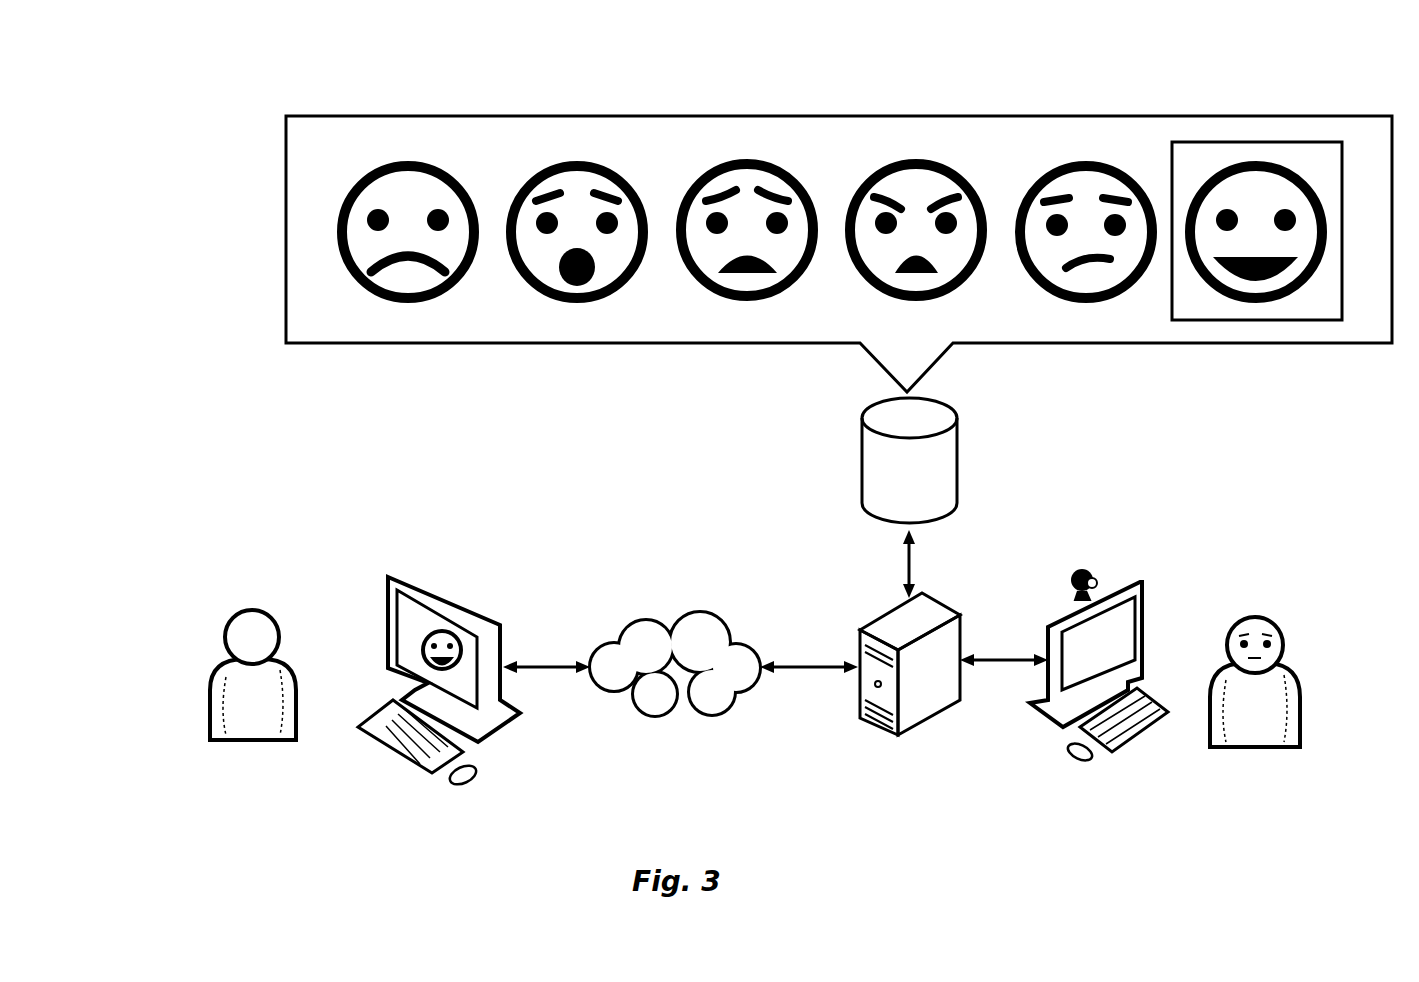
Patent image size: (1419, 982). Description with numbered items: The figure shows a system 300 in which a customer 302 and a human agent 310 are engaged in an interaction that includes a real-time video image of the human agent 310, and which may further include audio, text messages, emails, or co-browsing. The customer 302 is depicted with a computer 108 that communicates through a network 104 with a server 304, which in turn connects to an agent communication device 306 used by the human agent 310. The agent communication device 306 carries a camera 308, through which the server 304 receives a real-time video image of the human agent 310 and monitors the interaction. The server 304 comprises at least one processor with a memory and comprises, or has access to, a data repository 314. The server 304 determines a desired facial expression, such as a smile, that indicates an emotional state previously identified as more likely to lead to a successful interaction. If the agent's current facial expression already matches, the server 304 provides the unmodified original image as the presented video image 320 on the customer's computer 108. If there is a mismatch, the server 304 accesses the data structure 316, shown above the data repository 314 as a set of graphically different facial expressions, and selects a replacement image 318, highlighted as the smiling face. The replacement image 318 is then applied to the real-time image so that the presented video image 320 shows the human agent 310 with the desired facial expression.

The system 300 is at (1307, 73).
The data structure 316 is at (422, 116).
The replacement image 318 is at (1182, 143).
The data repository 314 is at (960, 465).
The server 304 is at (913, 725).
The network 104 is at (705, 713).
The client computing device 108 is at (488, 740).
The video image 320 is at (420, 620).
The customer 302 is at (233, 737).
The agent communication device 306 is at (1120, 743).
The camera 308 is at (1092, 573).
The human agent 310 is at (1283, 607).